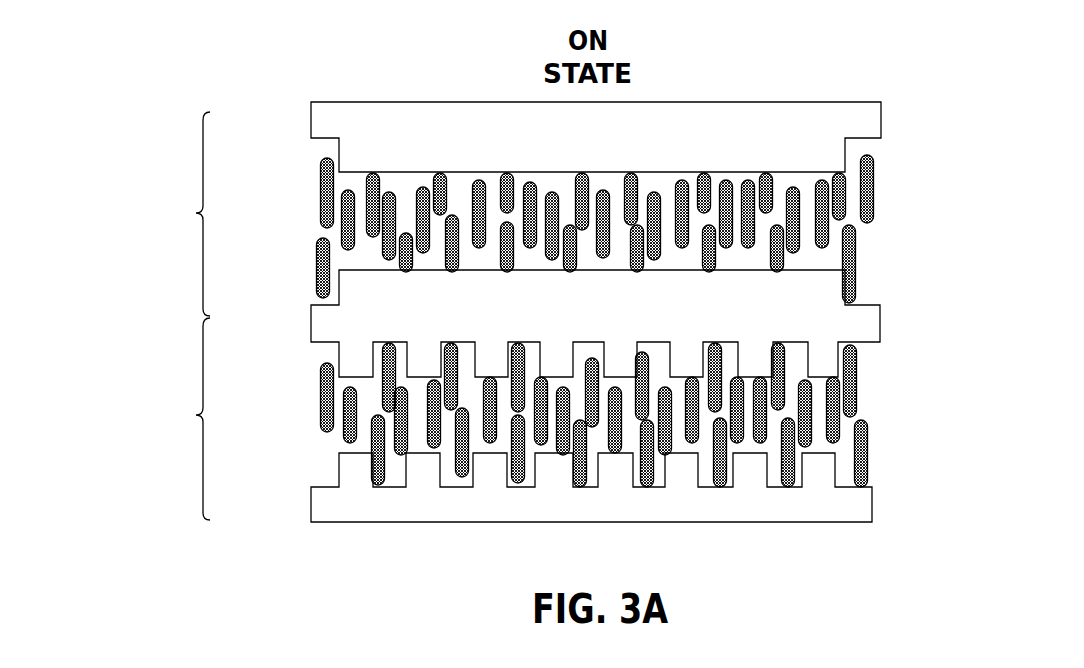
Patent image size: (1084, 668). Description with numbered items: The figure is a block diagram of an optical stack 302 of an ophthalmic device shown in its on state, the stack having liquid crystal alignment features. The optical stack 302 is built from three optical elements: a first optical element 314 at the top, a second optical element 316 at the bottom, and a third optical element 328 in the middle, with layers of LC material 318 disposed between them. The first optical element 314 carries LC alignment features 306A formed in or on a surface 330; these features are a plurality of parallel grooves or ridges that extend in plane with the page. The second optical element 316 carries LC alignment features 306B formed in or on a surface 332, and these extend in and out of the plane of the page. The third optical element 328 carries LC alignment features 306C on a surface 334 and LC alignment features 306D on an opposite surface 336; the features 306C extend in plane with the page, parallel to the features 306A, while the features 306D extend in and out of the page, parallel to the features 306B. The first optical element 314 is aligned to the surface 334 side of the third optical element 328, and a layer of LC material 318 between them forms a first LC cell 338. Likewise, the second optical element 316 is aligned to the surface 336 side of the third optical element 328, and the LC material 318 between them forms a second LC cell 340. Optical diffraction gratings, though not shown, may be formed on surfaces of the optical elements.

The optical stack 302 is at (308, 42).
The first optical element 314 is at (743, 101).
The second optical element 316 is at (722, 522).
The LC material 318 is at (884, 229).
The LC alignment features 306A is at (851, 147).
The LC alignment features 306B is at (824, 487).
The LC alignment features 306C is at (851, 296).
The LC alignment features 306D is at (830, 346).
The third optical element 328 is at (610, 318).
The surface 330 is at (310, 142).
The surface 332 is at (311, 483).
The surface 334 is at (310, 299).
The surface 336 is at (312, 349).
The first LC cell 338 is at (128, 214).
The second LC cell 340 is at (126, 419).